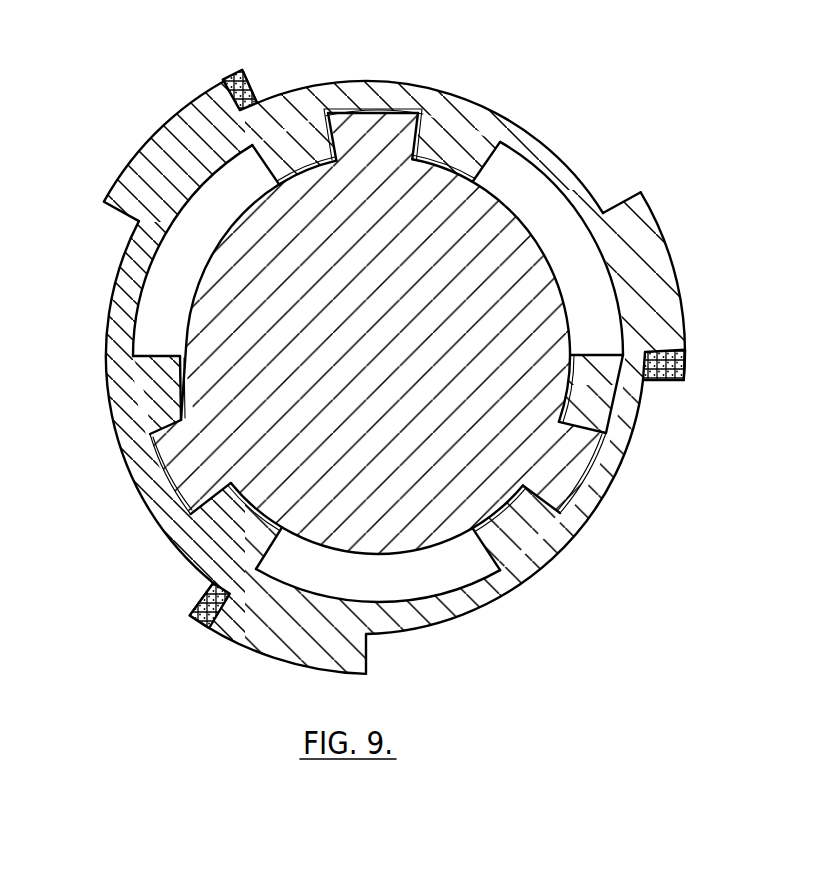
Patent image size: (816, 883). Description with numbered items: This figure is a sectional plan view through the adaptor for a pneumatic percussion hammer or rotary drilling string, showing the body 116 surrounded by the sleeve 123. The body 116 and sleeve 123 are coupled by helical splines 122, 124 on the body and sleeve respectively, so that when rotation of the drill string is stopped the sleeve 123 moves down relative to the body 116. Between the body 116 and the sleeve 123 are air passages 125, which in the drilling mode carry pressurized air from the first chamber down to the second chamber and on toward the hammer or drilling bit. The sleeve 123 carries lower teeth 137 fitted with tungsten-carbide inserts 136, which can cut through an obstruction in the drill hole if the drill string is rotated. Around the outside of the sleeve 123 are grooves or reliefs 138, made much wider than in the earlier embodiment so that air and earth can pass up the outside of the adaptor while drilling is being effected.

The body 116 is at (496, 188).
The helical spline 122 is at (380, 111).
The sleeve 123 is at (394, 378).
The helical spline 124 is at (158, 392).
The air passage 125 is at (573, 254).
The tungsten-carbide insert 136 is at (684, 386).
The lower tooth 137 is at (672, 343).
The groove or relief 138 is at (597, 162).